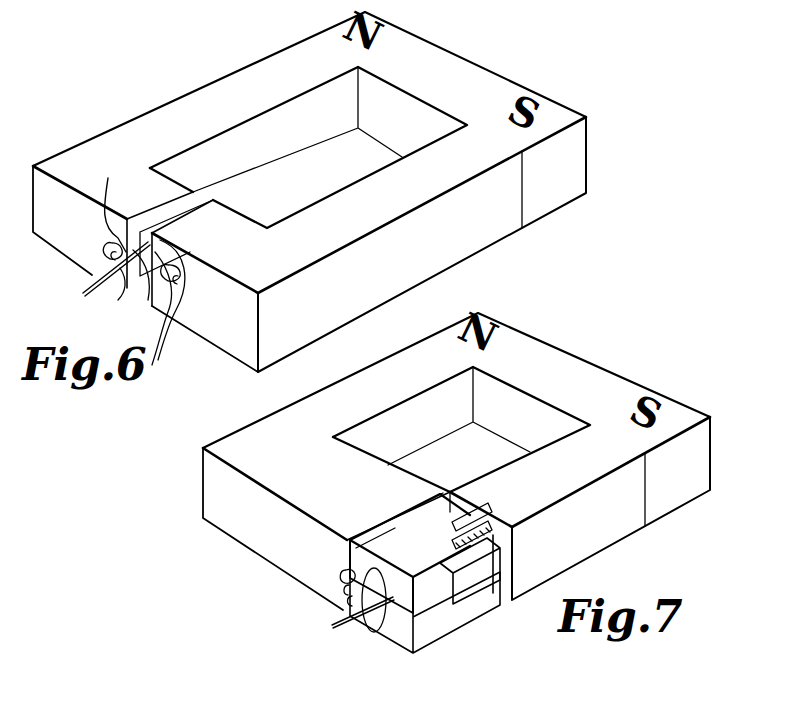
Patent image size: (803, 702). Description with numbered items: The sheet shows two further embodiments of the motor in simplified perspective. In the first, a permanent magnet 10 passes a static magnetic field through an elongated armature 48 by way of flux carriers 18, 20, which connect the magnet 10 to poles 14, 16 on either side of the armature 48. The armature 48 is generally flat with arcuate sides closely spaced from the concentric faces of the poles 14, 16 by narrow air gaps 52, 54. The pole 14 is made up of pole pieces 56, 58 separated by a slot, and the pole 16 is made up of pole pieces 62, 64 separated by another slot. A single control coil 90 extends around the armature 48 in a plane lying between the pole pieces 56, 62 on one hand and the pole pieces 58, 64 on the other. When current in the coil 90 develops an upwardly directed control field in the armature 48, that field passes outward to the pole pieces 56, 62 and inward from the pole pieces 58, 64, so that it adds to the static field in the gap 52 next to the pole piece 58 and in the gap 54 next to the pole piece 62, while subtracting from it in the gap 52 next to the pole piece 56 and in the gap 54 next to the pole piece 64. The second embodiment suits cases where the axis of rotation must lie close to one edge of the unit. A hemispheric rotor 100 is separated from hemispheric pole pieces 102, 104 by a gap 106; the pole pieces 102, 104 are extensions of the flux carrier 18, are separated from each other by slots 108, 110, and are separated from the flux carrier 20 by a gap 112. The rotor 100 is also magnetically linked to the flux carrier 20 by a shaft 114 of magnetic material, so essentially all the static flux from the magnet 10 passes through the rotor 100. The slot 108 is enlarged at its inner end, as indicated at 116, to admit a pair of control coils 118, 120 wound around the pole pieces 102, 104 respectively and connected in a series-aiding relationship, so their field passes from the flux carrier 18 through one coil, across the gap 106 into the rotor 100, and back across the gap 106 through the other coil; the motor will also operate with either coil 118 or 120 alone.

In FIG. 6, the permanent magnet 10 is at (473, 72).
In FIG. 7, the permanent magnet 10 is at (575, 363).
In FIG. 6, the pole 14 is at (88, 277).
In FIG. 6, the pole 16 is at (158, 320).
In FIG. 6, the flux carrier 18 is at (202, 76).
In FIG. 7, the flux carrier 18 is at (237, 424).
In FIG. 6, the flux carrier 20 is at (466, 263).
In FIG. 7, the flux carrier 20 is at (620, 538).
In FIG. 6, the armature 48 is at (147, 300).
In FIG. 6, the air gap 52 is at (109, 205).
In FIG. 6, the air gap 54 is at (163, 312).
In FIG. 6, the pole piece 56 is at (116, 222).
In FIG. 6, the pole piece 58 is at (121, 297).
In FIG. 6, the pole piece 62 is at (168, 244).
In FIG. 6, the pole piece 64 is at (172, 303).
In FIG. 6, the control coil 90 is at (175, 277).
In FIG. 7, the hemispheric rotor 100 is at (370, 630).
In FIG. 7, the hemispheric pole piece 102 is at (393, 576).
In FIG. 7, the hemispheric pole piece 104 is at (396, 650).
In FIG. 7, the gap 106 is at (378, 548).
In FIG. 7, the slot 108 is at (352, 597).
In FIG. 7, the slot 110 is at (452, 600).
In FIG. 7, the gap 112 is at (506, 595).
In FIG. 7, the shaft 114 is at (496, 538).
In FIG. 7, the enlarged inner end 116 is at (342, 577).
In FIG. 7, the control coil 118 is at (388, 516).
In FIG. 7, the control coil 120 is at (354, 612).